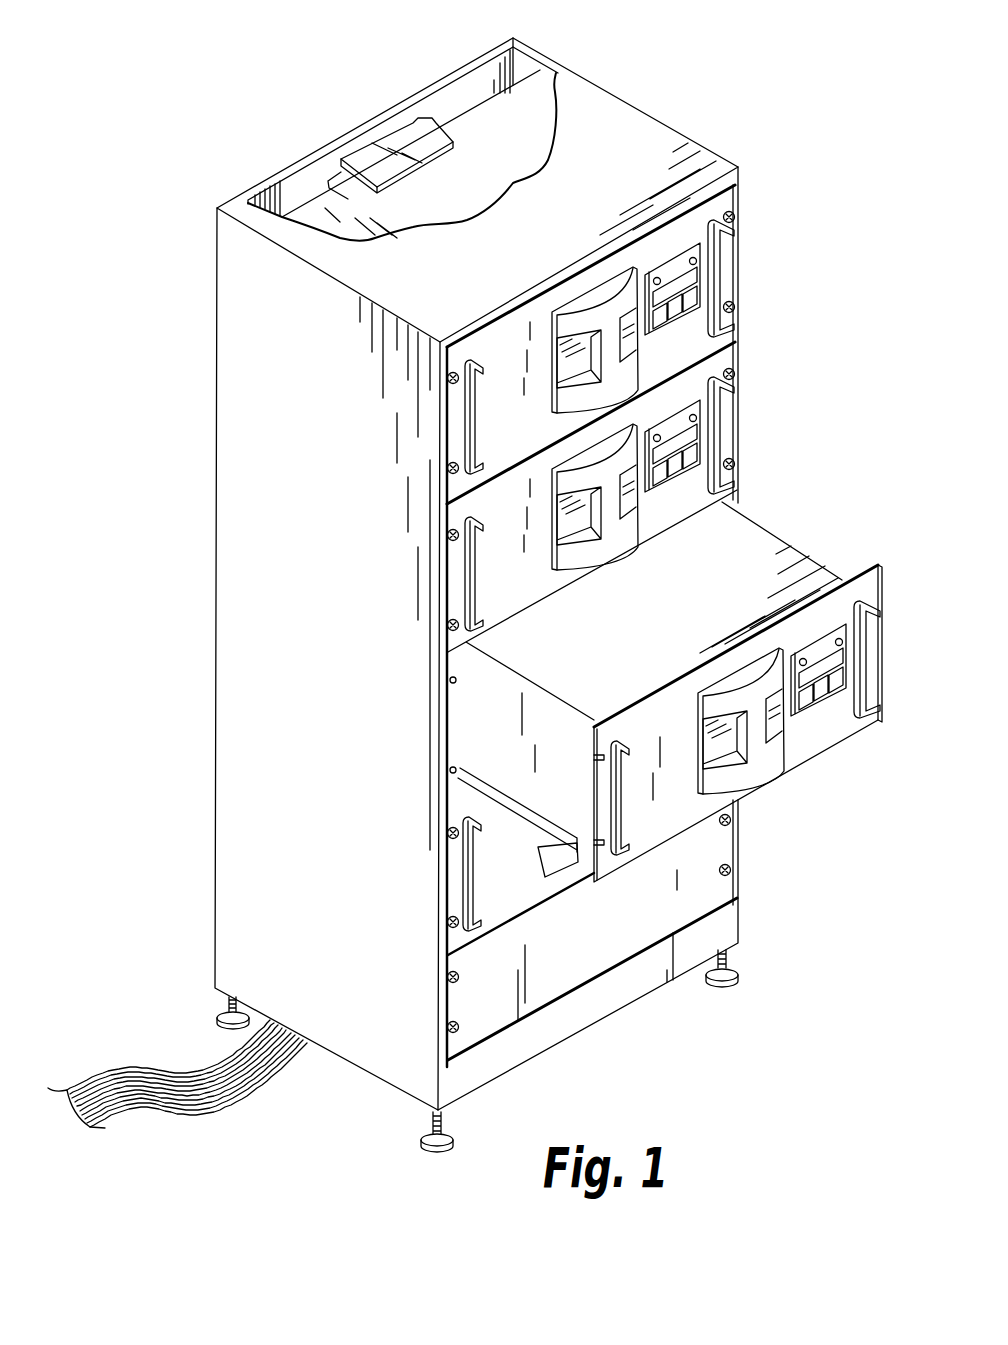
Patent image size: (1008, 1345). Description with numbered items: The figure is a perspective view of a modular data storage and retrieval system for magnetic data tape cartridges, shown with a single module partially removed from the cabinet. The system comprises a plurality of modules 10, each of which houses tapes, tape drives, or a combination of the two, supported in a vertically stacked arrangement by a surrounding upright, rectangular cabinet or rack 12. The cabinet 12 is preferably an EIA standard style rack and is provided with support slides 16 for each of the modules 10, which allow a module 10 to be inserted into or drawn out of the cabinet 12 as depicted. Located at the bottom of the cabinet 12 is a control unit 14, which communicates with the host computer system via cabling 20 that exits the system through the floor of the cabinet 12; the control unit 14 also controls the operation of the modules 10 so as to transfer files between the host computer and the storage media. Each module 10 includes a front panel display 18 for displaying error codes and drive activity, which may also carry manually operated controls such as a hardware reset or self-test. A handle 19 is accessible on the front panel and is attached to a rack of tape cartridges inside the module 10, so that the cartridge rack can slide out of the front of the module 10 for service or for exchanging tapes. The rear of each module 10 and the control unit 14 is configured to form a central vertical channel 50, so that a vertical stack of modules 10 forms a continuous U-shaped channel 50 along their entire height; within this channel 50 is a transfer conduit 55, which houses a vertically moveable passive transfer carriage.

The module 10 is at (785, 528).
The cabinet 12 is at (277, 419).
The control unit 14 is at (560, 963).
The support slides 16 is at (470, 785).
The front panel display 18 is at (817, 703).
The handle 19 is at (768, 747).
The cabling 20 is at (168, 1083).
The central vertical channel 50 is at (406, 160).
The transfer conduit 55 is at (382, 118).